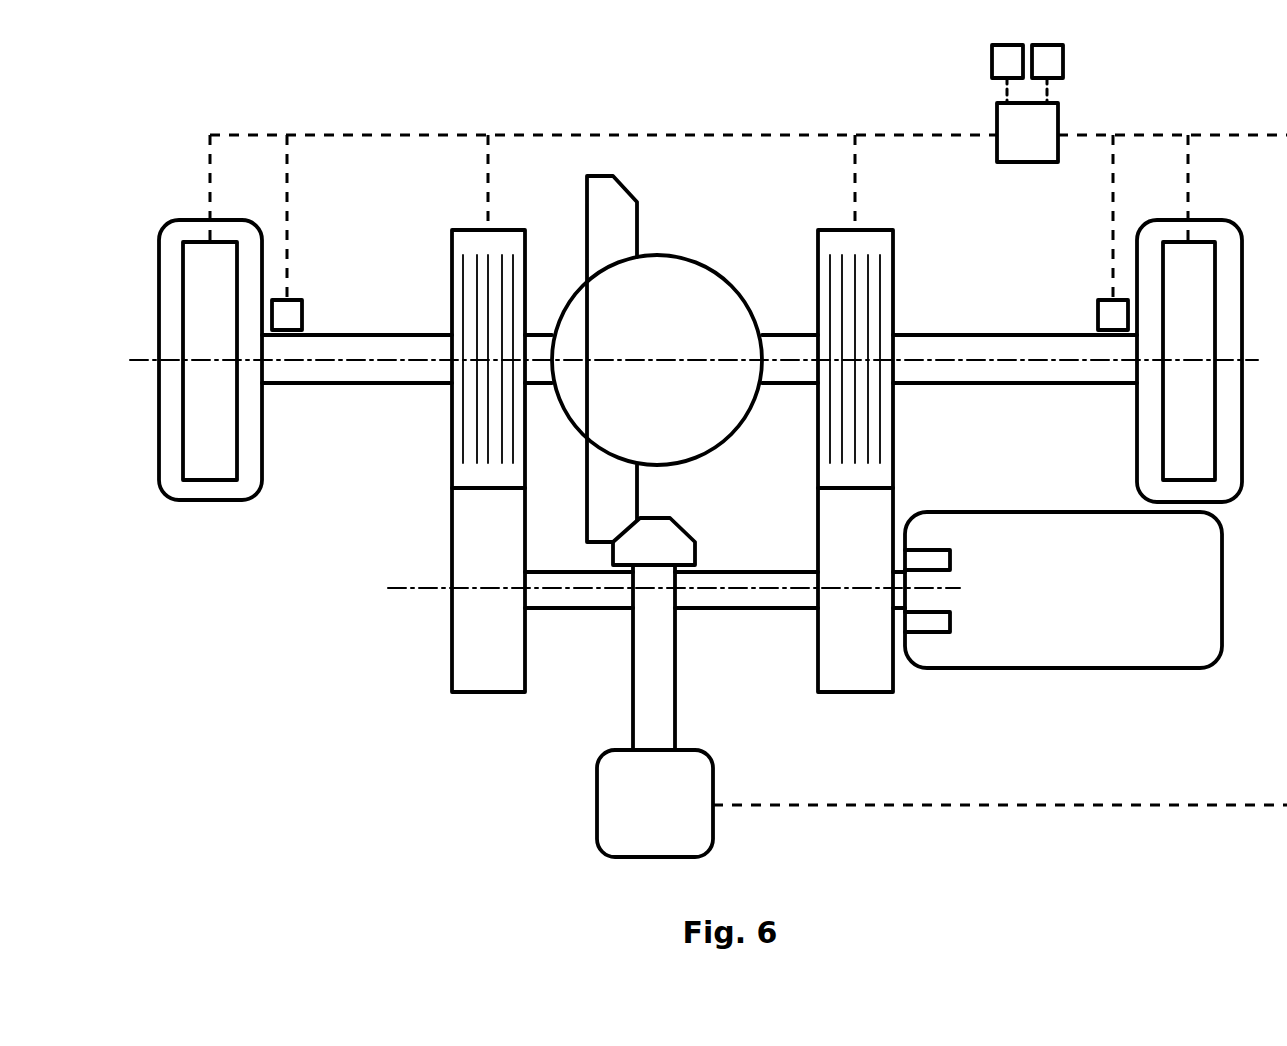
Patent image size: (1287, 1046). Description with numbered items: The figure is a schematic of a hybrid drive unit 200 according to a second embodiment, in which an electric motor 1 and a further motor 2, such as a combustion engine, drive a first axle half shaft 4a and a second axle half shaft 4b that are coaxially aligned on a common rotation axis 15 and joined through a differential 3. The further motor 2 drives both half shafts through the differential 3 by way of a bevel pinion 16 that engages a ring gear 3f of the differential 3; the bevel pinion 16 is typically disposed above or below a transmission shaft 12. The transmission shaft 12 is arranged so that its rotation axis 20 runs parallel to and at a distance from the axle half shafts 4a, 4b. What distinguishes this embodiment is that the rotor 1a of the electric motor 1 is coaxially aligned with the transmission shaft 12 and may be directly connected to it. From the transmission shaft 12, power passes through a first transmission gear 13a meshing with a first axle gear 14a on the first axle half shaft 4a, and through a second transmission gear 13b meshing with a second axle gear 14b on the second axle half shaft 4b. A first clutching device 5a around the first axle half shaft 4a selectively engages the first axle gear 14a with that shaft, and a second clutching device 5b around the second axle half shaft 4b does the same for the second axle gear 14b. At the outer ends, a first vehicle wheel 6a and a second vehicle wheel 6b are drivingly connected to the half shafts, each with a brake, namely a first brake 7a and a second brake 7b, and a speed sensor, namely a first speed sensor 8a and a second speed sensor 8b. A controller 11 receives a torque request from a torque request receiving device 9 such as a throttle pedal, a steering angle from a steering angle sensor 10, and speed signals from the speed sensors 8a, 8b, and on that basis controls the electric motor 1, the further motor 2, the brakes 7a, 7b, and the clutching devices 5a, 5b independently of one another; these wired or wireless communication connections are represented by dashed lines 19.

The electric motor 1 is at (1153, 668).
The rotor 1a is at (952, 622).
The further motor 2 is at (595, 803).
The differential 3 is at (722, 255).
The ring gear 3f is at (585, 528).
The first axle half shaft 4a is at (1032, 383).
The second axle half shaft 4b is at (290, 383).
The first clutching device 5a is at (906, 286).
The second clutching device 5b is at (436, 290).
The first vehicle wheel 6a is at (1232, 502).
The second vehicle wheel 6b is at (205, 500).
The first brake 7a is at (1205, 243).
The second brake 7b is at (198, 242).
The first speed sensor 8a is at (1098, 315).
The second speed sensor 8b is at (302, 316).
The torque request receiving device 9 is at (990, 62).
The steering angle sensor 10 is at (1065, 62).
The controller 11 is at (1023, 162).
The transmission shaft 12 is at (705, 608).
The first transmission gear 13a is at (857, 692).
The second transmission gear 13b is at (482, 692).
The first axle gear 14a is at (893, 418).
The second axle gear 14b is at (452, 425).
The rotation axis 15 is at (148, 358).
The bevel pinion 16 is at (683, 530).
The dashed lines 19 is at (610, 135).
The rotation axis 20 is at (398, 588).
The hybrid drive unit 200 is at (1052, 909).